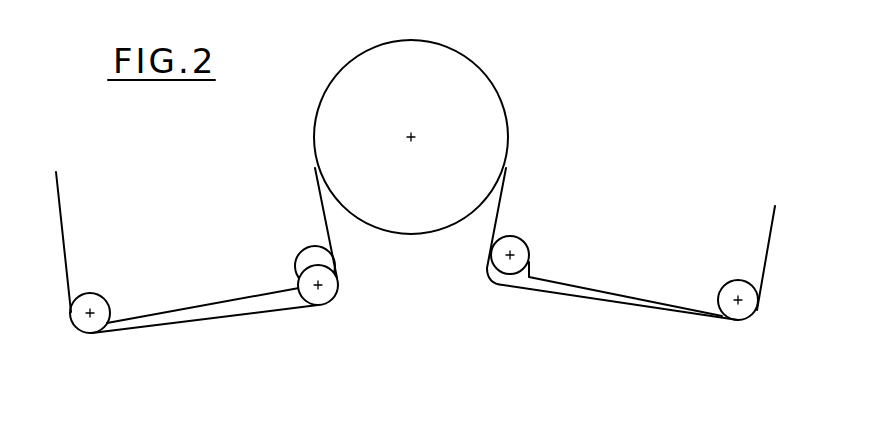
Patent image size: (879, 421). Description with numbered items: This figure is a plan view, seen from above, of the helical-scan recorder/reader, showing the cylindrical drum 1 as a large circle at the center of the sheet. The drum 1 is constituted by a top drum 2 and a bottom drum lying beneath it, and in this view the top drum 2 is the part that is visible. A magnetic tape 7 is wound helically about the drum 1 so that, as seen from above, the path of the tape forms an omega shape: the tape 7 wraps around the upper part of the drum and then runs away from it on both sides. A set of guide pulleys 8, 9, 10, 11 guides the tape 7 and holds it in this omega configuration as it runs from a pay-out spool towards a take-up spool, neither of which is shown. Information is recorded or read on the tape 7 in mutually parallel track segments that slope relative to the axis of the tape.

The cylindrical drum 1 is at (363, 42).
The top drum 2 is at (480, 88).
The magnetic tape 7 is at (316, 122).
The guide pulley 8 is at (80, 296).
The guide pulley 9 is at (300, 263).
The guide pulley 10 is at (528, 260).
The guide pulley 11 is at (738, 282).